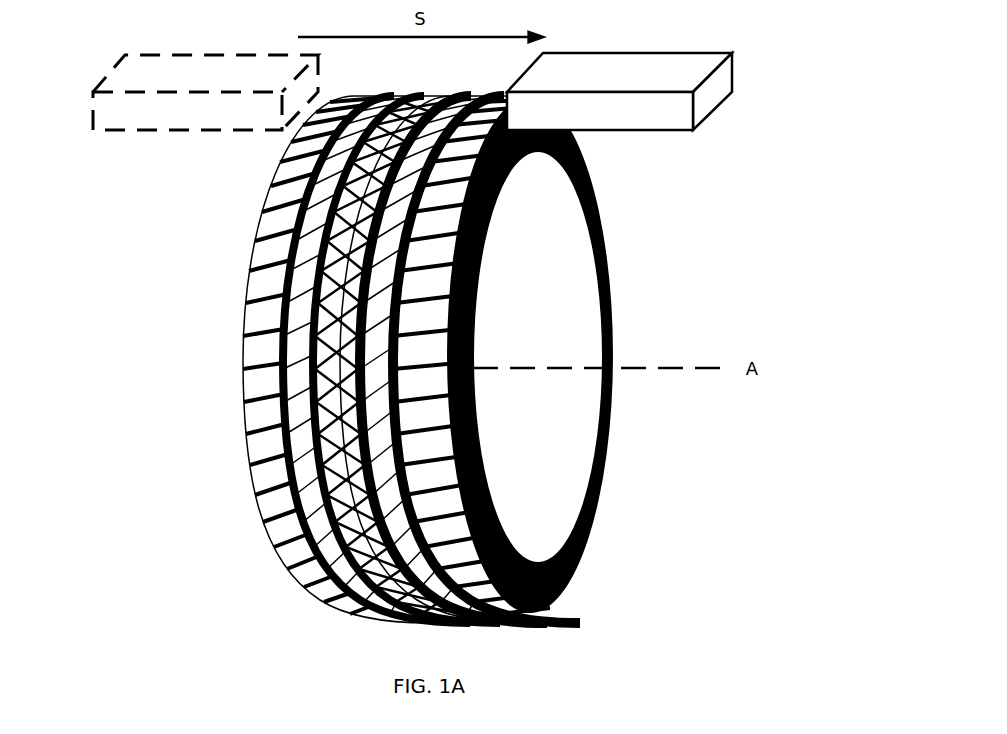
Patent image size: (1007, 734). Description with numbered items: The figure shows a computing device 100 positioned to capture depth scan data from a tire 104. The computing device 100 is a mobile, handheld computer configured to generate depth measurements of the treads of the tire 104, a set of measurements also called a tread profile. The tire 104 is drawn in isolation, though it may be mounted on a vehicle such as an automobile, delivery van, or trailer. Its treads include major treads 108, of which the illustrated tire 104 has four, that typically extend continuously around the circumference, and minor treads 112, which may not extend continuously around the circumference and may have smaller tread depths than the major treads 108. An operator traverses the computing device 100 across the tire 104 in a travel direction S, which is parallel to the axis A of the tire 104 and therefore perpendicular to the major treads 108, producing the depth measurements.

The computing device 100 is at (733, 72).
The tire 104 is at (618, 273).
The major treads 108 is at (243, 352).
The minor treads 112 is at (262, 473).